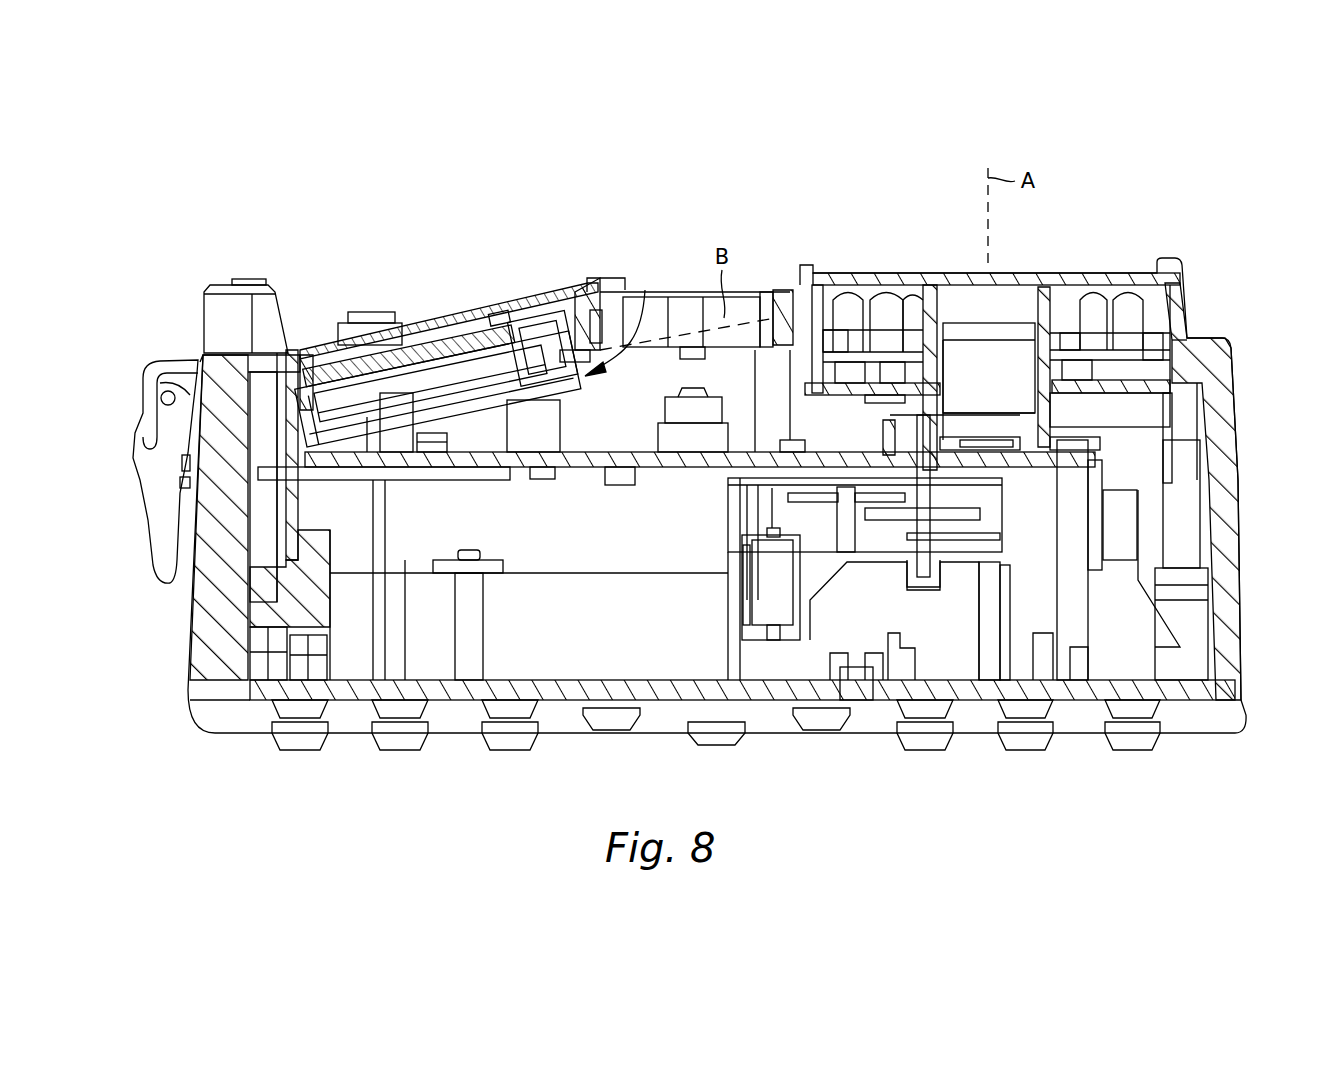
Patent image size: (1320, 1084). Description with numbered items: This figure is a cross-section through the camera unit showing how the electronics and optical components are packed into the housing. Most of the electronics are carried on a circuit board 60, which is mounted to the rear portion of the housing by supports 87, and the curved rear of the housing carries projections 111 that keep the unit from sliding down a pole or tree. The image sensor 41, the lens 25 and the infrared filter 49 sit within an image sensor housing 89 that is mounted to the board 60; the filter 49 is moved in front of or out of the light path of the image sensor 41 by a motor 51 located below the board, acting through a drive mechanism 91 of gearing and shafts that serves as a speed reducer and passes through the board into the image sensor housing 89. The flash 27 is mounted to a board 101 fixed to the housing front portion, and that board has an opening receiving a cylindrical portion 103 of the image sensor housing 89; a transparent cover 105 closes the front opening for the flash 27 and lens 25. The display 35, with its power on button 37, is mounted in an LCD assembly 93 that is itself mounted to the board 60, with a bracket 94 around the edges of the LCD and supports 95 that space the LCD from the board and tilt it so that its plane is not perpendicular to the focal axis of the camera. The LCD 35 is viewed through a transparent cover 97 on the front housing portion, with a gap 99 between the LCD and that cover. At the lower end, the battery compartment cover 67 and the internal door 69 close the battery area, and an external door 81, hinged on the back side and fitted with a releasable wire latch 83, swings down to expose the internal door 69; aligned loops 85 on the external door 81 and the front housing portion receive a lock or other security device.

The camera lens 25 is at (1005, 318).
The flash assembly 27 is at (1097, 287).
The display 35 is at (468, 380).
The power on button 37 is at (373, 316).
The image sensor 41 is at (1055, 487).
The infrared filter 49 is at (1080, 405).
The motor 51 is at (775, 602).
The circuit board 60 is at (580, 470).
The cover 67 is at (405, 560).
The internal door 69 is at (262, 648).
The external door 81 is at (200, 655).
The releasable wire latch 83 is at (165, 362).
The loop 85 is at (246, 280).
The support 87 is at (1080, 608).
The image sensor housing 89 is at (1020, 420).
The drive mechanism 91 is at (925, 590).
The LCD assembly 93 is at (676, 313).
The bracket 94 is at (526, 335).
The support 95 is at (372, 448).
The transparent cover 97 is at (415, 358).
The gap 99 is at (440, 340).
The board 101 is at (1140, 360).
The cylindrical portion 103 is at (1045, 322).
The transparent cover 105 is at (845, 273).
The projection 111 is at (1130, 742).